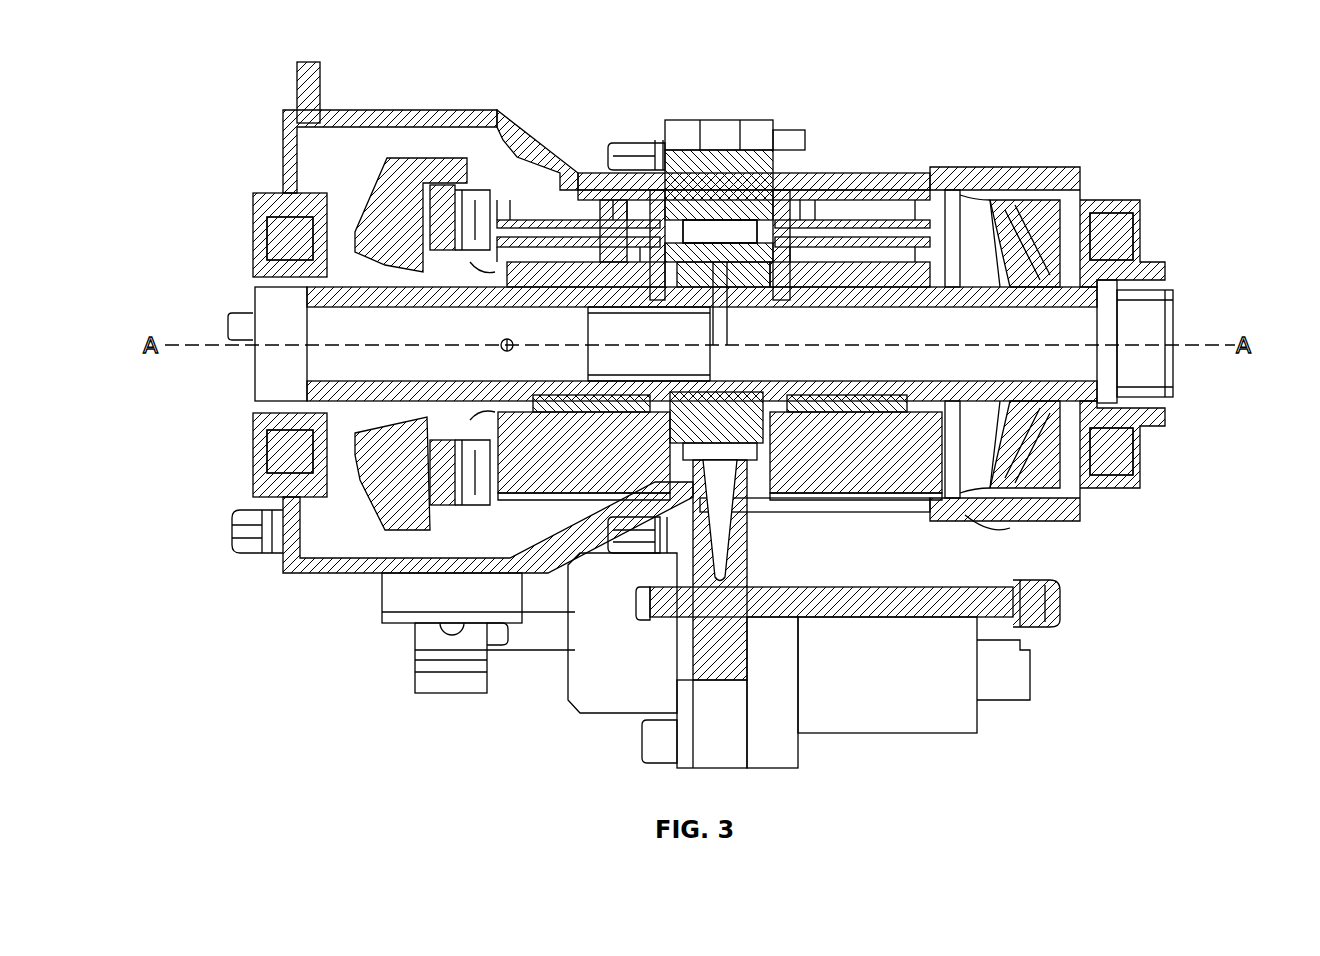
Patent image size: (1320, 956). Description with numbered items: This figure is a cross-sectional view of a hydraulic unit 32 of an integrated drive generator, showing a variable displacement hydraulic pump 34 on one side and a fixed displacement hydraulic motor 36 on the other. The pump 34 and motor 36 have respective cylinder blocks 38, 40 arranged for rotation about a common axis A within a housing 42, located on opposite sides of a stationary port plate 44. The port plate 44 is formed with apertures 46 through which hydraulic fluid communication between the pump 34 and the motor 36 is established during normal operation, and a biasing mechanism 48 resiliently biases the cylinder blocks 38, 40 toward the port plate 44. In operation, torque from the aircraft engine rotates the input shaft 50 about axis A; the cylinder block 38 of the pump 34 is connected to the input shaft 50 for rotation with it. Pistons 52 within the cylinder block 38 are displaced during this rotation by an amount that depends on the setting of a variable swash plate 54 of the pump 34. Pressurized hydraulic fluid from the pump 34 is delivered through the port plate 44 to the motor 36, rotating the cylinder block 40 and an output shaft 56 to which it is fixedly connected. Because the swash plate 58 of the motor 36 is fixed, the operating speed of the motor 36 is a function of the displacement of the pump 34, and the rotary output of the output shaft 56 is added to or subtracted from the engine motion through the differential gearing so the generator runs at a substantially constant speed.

The hydraulic unit 32 is at (1102, 100).
The variable displacement hydraulic pump 34 is at (490, 510).
The fixed displacement hydraulic motor 36 is at (908, 505).
The cylinder block 38 is at (640, 157).
The cylinder block 40 is at (882, 193).
The housing 42 is at (512, 132).
The stationary port plate 44 is at (725, 155).
The apertures 46 is at (735, 230).
The biasing mechanism 48 is at (838, 400).
The input shaft 50 is at (318, 350).
The pistons 52 is at (620, 205).
The variable swash plate 54 is at (393, 180).
The output shaft 56 is at (1160, 318).
The swash plate 58 is at (1068, 512).